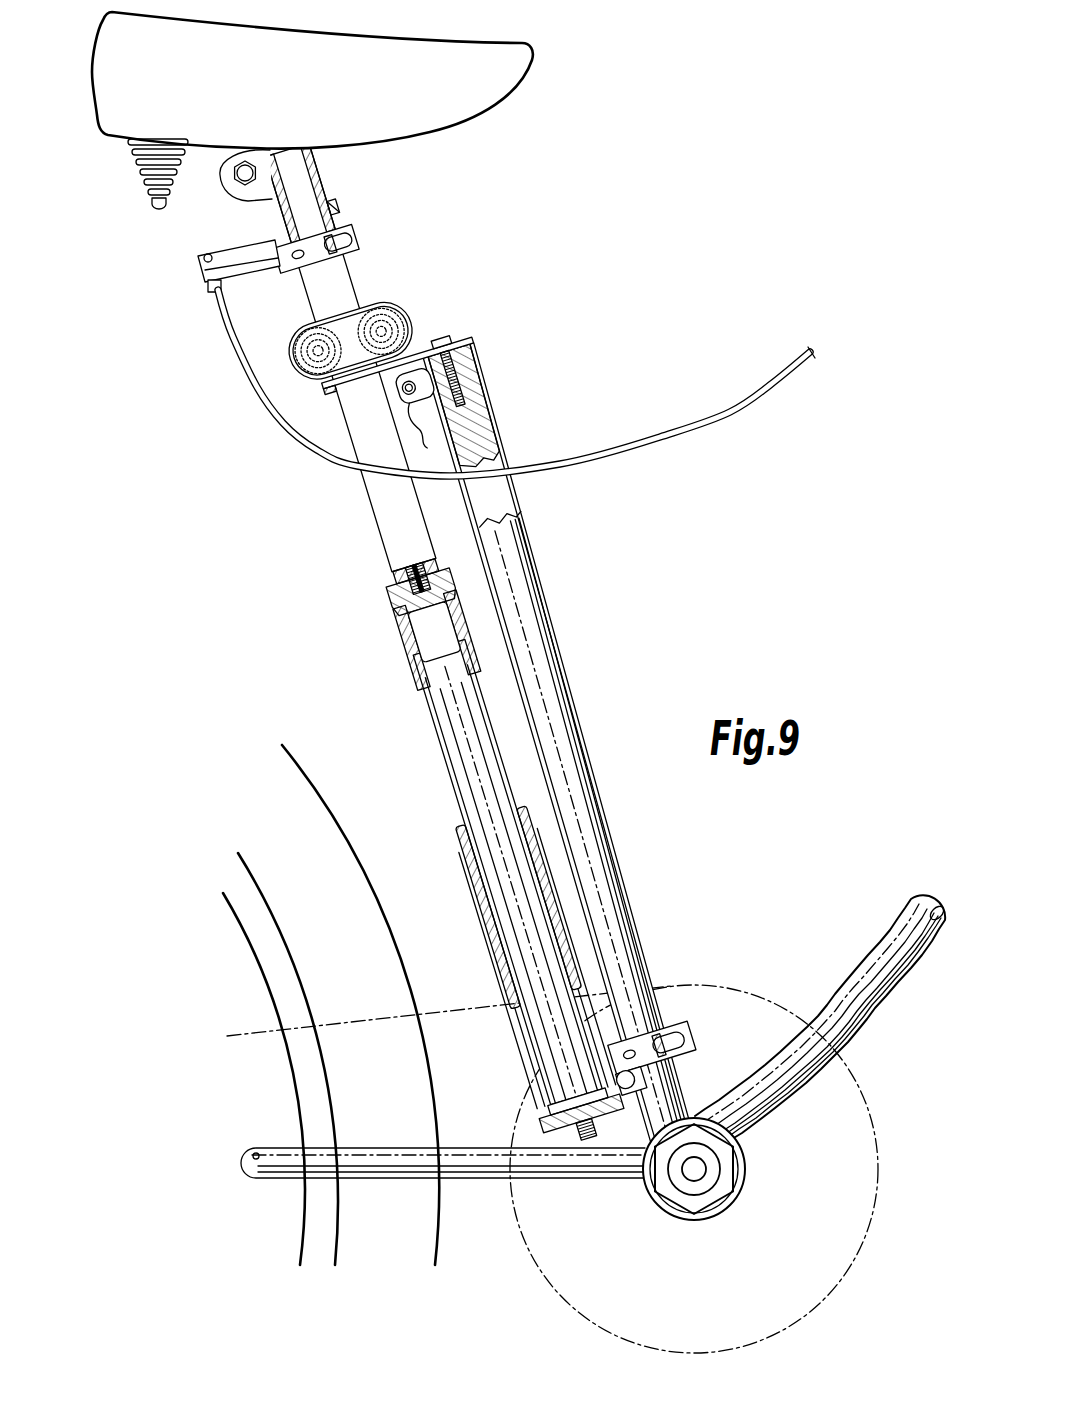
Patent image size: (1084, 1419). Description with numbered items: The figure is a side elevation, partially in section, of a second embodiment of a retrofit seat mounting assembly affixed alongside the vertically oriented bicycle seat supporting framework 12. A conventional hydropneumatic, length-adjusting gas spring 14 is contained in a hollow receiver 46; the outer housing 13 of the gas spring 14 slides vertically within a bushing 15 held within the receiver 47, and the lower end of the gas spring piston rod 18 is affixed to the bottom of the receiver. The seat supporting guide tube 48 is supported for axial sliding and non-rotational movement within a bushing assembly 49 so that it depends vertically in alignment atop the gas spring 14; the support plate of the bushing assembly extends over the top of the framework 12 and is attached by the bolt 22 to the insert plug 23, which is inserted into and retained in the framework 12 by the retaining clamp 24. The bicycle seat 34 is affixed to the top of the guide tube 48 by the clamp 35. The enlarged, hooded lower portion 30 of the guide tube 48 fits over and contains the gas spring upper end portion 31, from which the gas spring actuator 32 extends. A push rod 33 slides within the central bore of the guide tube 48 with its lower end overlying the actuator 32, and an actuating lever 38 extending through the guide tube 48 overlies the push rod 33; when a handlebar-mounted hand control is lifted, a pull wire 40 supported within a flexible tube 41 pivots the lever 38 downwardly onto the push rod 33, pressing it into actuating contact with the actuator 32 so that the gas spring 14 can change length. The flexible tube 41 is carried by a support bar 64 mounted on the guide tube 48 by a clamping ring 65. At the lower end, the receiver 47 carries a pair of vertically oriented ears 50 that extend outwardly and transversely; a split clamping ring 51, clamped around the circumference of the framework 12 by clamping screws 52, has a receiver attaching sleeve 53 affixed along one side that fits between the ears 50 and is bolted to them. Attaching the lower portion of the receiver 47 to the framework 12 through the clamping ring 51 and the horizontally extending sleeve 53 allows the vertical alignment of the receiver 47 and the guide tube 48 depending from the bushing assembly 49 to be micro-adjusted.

The bicycle seat supporting framework 12 is at (517, 496).
The outer housing 13 is at (463, 770).
The gas spring 14 is at (424, 708).
The bushing 15 is at (460, 818).
The gas spring piston rod 18 is at (590, 1123).
The bolt 22 is at (425, 345).
The plug 23 is at (467, 427).
The retaining clamp 24 is at (422, 418).
The hooded lower portion 30 is at (407, 643).
The gas spring upper end portion 31 is at (427, 647).
The gas spring actuator 32 is at (447, 612).
The push rod 33 is at (398, 577).
The bicycle seat 34 is at (274, 97).
The clamp 35 is at (267, 198).
The actuating lever 38 is at (222, 247).
The pull wire 40 is at (210, 267).
The flexible tube 41 is at (258, 397).
The hollow receiver 46 is at (312, 540).
The receiver 47 is at (520, 1031).
The guide tube 48 is at (386, 527).
The bushing assembly 49 is at (376, 294).
The ears 50 is at (607, 1043).
The split clamping ring 51 is at (703, 1027).
The clamping screws 52 is at (667, 1037).
The receiver attaching sleeve 53 is at (633, 1090).
The support bar 64 is at (253, 277).
The clamping ring 65 is at (360, 240).